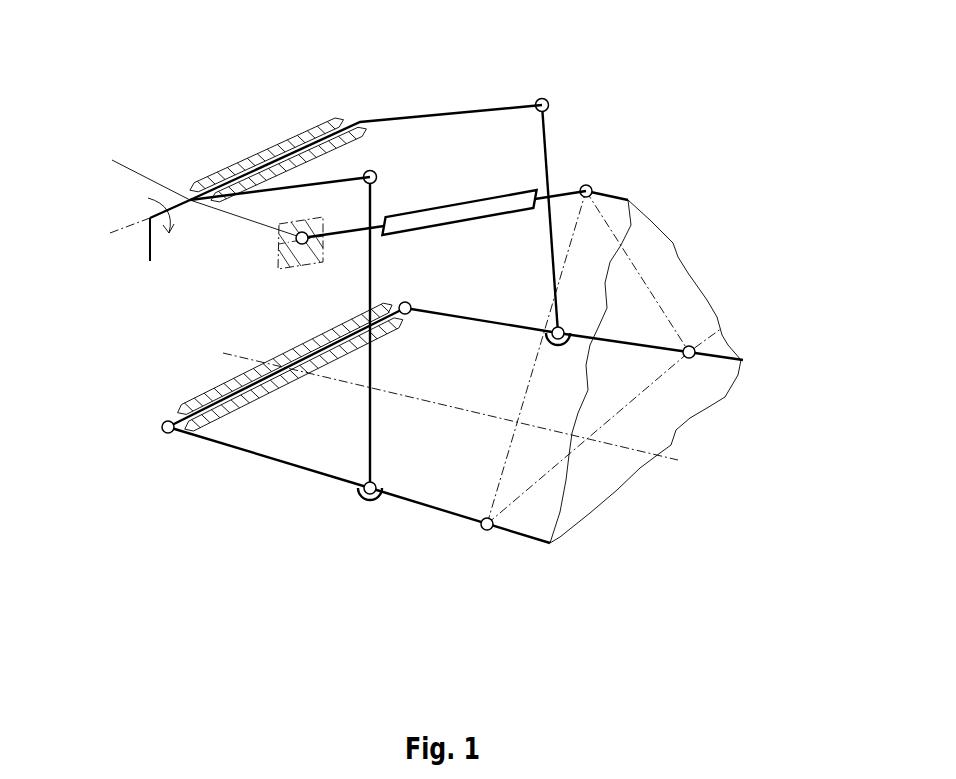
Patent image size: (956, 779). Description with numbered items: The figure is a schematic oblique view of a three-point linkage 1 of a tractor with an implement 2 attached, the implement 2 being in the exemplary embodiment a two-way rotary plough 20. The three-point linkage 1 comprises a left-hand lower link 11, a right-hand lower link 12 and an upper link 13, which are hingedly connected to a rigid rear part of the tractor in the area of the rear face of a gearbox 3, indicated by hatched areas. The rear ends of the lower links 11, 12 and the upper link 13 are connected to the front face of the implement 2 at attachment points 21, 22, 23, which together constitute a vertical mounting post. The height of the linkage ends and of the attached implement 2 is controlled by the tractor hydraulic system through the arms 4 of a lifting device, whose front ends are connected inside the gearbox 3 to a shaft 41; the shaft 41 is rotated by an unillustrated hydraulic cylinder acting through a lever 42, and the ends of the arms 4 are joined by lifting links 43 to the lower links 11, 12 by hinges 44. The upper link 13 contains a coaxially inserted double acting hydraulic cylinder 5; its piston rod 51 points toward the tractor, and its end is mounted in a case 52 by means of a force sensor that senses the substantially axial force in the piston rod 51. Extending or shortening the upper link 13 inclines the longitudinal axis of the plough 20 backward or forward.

The three-point linkage 1 is at (436, 315).
The implement 2 is at (658, 251).
The two-way rotary plough 20 is at (499, 353).
The gearbox 3 is at (250, 175).
The arms of a lifting device 4 is at (417, 116).
The double acting hydraulic cylinder 5 is at (515, 198).
The left-hand lower link 11 is at (265, 458).
The right-hand lower link 12 is at (633, 348).
The upper link 13 is at (468, 181).
The attachment point 21 is at (483, 531).
The attachment point 22 is at (722, 328).
The attachment point 23 is at (590, 186).
The shaft 41 is at (300, 137).
The lever 42 is at (145, 250).
The lifting links 43 is at (548, 150).
The hinges 44 is at (566, 340).
The piston rod 51 is at (348, 233).
The case 52 is at (297, 243).